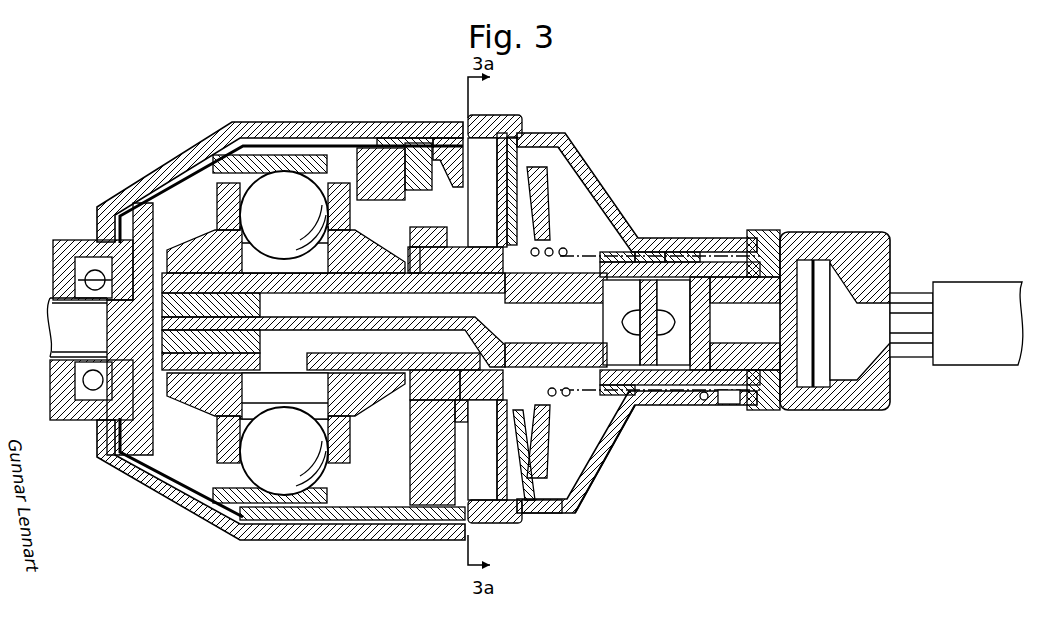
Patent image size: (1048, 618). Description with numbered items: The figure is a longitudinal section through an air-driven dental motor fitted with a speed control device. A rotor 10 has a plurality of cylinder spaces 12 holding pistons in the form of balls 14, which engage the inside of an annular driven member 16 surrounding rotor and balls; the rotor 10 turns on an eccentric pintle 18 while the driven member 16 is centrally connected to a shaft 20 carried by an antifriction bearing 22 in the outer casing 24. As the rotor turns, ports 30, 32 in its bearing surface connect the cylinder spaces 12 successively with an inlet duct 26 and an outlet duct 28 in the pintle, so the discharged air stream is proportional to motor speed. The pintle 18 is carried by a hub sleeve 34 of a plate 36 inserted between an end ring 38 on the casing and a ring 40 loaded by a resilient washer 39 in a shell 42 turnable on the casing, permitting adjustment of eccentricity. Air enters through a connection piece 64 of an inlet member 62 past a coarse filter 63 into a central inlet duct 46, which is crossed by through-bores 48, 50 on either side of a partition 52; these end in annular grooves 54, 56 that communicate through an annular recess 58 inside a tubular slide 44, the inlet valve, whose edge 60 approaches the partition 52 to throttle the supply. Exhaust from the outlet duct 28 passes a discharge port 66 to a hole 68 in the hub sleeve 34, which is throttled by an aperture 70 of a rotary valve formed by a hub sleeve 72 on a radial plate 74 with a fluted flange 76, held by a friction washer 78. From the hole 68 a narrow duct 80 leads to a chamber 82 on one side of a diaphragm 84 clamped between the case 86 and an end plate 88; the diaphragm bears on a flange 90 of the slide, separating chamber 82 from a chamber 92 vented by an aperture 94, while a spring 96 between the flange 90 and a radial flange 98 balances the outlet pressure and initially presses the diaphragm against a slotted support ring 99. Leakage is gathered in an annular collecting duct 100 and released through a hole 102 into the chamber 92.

The rotor 10 is at (206, 256).
The cylinder spaces 12 is at (298, 270).
The balls 14 is at (284, 333).
The driven member 16 is at (283, 152).
The pintle 18 is at (176, 272).
The shaft 20 is at (50, 302).
The antifriction bearing 22 is at (94, 268).
The outer casing 24 is at (168, 172).
The inlet duct 26 is at (333, 291).
The outlet duct 28 is at (393, 349).
The port 30 is at (222, 302).
The port 32 is at (294, 370).
The hub sleeve 34 is at (472, 278).
The plate 36 is at (420, 146).
The end ring 38 is at (394, 200).
The resilient washer 39 is at (474, 128).
The ring 40 is at (452, 140).
The shell 42 is at (396, 136).
The tubular slide 44 is at (618, 250).
The central inlet duct 46 is at (556, 339).
The through-bore 48 is at (621, 322).
The through-bore 50 is at (718, 323).
The partition 52 is at (650, 340).
The annular groove 54 is at (612, 256).
The annular groove 56 is at (680, 258).
The annular recess 58 is at (660, 250).
The edge 60 is at (642, 250).
The inlet member 62 is at (786, 246).
The coarse filter 63 is at (811, 410).
The connection piece 64 is at (910, 292).
The discharge port 66 is at (462, 368).
The hole 68 is at (477, 385).
The aperture 70 is at (500, 472).
The hub sleeve 72 is at (480, 240).
The radial plate 74 is at (532, 136).
The fluted flange 76 is at (512, 138).
The washer 78 is at (496, 524).
The narrow duct 80 is at (462, 408).
The chamber 82 is at (532, 452).
The diaphragm 84 is at (540, 192).
The case 86 is at (584, 480).
The end plate 88 is at (538, 515).
The flange 90 is at (550, 244).
The chamber 92 is at (598, 460).
The aperture 94 is at (726, 406).
The spring 96 is at (702, 404).
The radial flange 98 is at (750, 246).
The slotted support ring 99 is at (536, 246).
The annular collecting duct 100 is at (548, 292).
The hole 102 is at (562, 398).